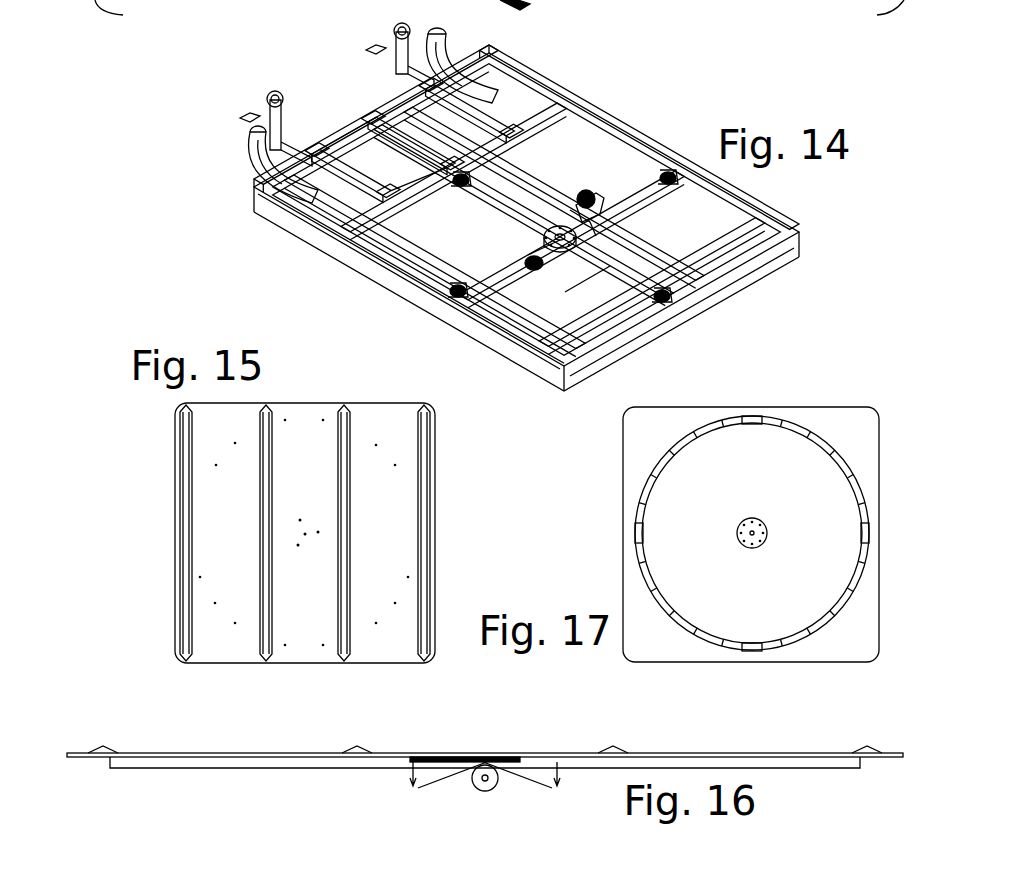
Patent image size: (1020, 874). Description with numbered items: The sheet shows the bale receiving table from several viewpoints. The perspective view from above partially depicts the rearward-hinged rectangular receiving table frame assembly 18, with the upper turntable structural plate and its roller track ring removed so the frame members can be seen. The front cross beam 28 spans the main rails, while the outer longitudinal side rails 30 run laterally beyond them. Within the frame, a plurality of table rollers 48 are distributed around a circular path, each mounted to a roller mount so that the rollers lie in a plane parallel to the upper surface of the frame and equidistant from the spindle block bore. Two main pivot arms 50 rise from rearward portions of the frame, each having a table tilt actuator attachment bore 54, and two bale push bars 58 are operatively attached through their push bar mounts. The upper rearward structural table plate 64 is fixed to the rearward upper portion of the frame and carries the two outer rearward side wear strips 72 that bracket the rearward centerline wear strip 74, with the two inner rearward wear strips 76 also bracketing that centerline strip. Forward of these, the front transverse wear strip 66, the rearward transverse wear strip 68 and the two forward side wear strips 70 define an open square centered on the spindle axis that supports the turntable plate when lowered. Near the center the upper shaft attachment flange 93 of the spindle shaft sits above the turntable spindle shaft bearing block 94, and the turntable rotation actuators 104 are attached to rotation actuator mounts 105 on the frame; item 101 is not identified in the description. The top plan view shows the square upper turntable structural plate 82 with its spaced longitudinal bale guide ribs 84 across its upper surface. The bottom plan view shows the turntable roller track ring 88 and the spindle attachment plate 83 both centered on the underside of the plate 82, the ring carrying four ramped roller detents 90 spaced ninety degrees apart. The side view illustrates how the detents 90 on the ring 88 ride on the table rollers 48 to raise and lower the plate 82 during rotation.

In FIG. 14, the rearward-hinged rectangular receiving table frame assembly 18 is at (576, 66).
In FIG. 14, the front cross beam 28 is at (714, 298).
In FIG. 14, the outer longitudinal side rails 30 is at (425, 306).
In FIG. 14, the table rollers 48 is at (459, 170).
In FIG. 16, the table rollers 48 is at (494, 788).
In FIG. 14, the main pivot arms 50 is at (265, 108).
In FIG. 14, the table tilt actuator attachment bore 54 is at (240, 124).
In FIG. 14, the bale push bars 58 is at (250, 147).
In FIG. 14, the upper rearward structural table plate 64 is at (347, 132).
In FIG. 14, the front transverse wear strip 66 is at (736, 266).
In FIG. 14, the rearward transverse wear strip 68 is at (350, 236).
In FIG. 14, the forward side wear strips 70 is at (386, 268).
In FIG. 14, the outer rearward side wear strips 72 is at (522, 72).
In FIG. 14, the rearward centerline wear strip 74 is at (371, 118).
In FIG. 14, the inner rearward wear strips 76 is at (316, 147).
In FIG. 15, the upper turntable structural plate 82 is at (293, 448).
In FIG. 17, the upper turntable structural plate 82 is at (636, 443).
In FIG. 16, the upper turntable structural plate 82 is at (279, 751).
In FIG. 17, the spindle attachment plate 83 is at (763, 545).
In FIG. 15, the longitudinal bale guide ribs 84 is at (190, 473).
In FIG. 16, the longitudinal bale guide ribs 84 is at (103, 746).
In FIG. 17, the turntable roller track ring 88 is at (660, 476).
In FIG. 16, the turntable roller track ring 88 is at (323, 769).
In FIG. 17, the ramped roller detents 90 is at (750, 426).
In FIG. 16, the ramped roller detents 90 is at (511, 757).
In FIG. 14, the upper shaft attachment flange 93 is at (576, 232).
In FIG. 14, the turntable spindle shaft bearing block 94 is at (598, 226).
In FIG. 14, the brace 101 is at (530, 272).
In FIG. 14, the turntable rotation actuators 104 is at (596, 296).
In FIG. 14, the rotation actuator mounts 105 is at (584, 192).